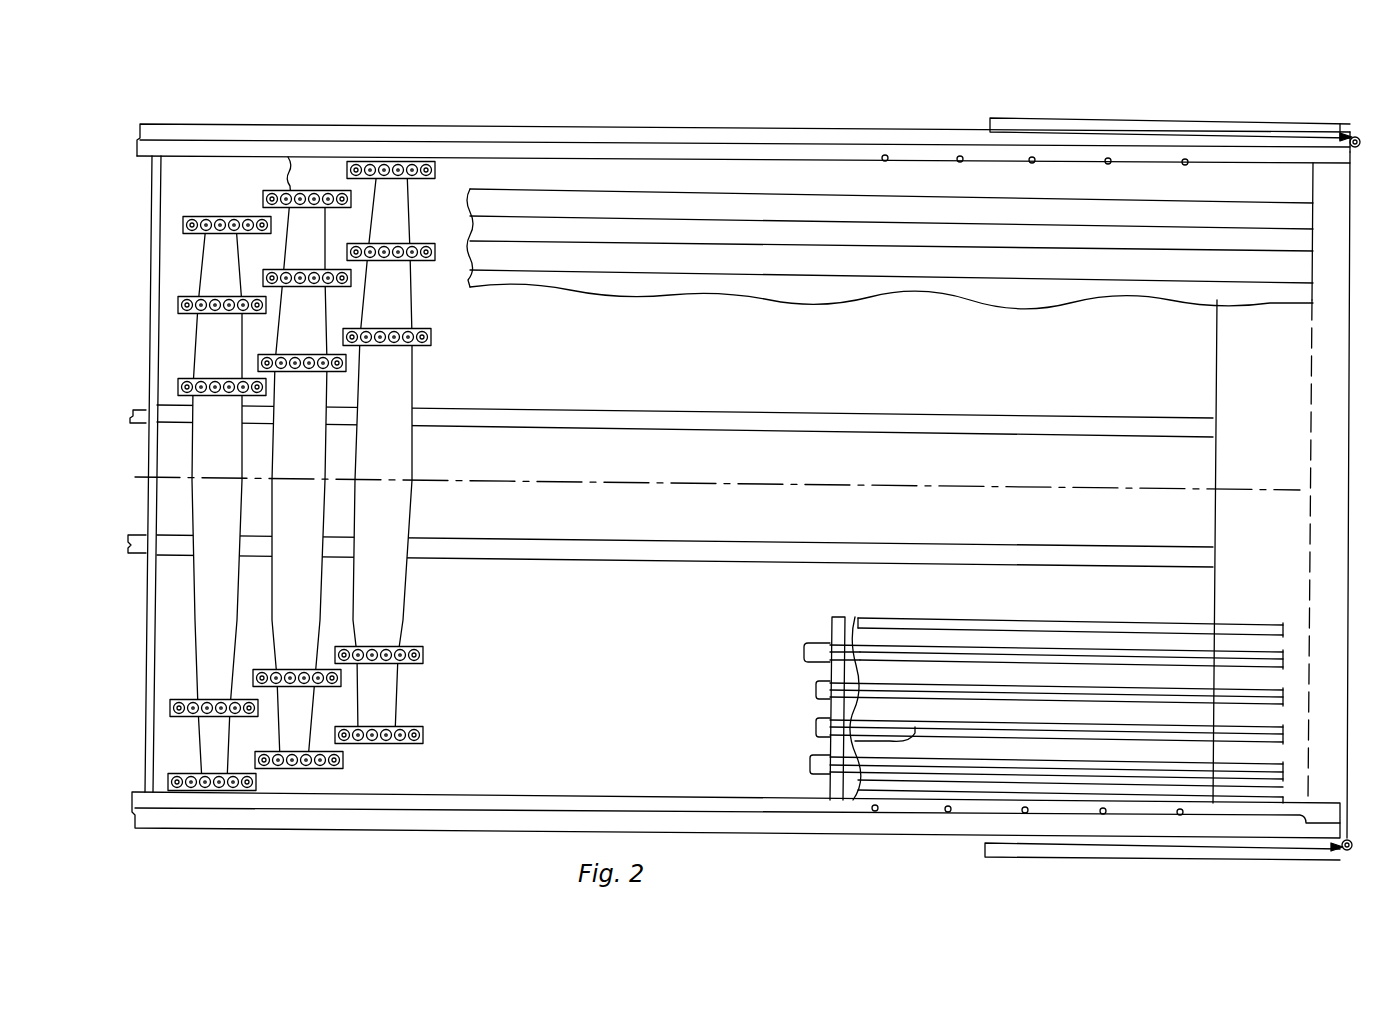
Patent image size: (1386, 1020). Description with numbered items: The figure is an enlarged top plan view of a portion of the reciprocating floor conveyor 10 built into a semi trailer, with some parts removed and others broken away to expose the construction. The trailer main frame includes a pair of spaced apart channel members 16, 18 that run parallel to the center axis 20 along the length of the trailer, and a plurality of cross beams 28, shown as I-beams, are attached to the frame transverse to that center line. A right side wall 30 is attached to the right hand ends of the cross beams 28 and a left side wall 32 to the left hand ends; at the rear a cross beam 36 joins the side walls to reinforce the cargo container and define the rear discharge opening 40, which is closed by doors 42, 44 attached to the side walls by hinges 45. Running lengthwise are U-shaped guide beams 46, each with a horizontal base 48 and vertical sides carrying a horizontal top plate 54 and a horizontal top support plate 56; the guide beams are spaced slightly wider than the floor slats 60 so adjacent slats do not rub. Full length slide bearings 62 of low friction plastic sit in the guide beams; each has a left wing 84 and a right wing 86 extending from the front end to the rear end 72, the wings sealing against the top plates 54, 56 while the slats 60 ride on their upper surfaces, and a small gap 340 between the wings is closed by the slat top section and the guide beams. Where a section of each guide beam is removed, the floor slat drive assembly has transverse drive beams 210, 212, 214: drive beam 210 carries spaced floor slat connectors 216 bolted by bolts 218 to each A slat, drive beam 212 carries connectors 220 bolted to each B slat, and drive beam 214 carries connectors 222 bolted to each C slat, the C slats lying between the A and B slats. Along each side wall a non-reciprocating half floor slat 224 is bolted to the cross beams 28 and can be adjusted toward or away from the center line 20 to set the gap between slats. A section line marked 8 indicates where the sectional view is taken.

The reciprocating floor conveyor 10 is at (1359, 172).
The channel member 16 is at (697, 405).
The channel member 18 is at (580, 563).
The center axis 20 is at (870, 477).
The cross beam 28 is at (160, 785).
The right side wall 30 is at (715, 138).
The left side wall 32 is at (888, 823).
The cross beam 36 is at (1325, 463).
The rear discharge opening 40 is at (1376, 378).
The door 42 is at (1035, 127).
The door 44 is at (1000, 850).
The hinge 45 is at (1357, 140).
The guide beam 46 is at (827, 720).
The horizontal base 48 is at (828, 772).
The horizontal top plate 54 is at (813, 660).
The horizontal top support plate 56 is at (818, 647).
The floor slat 60 is at (785, 178).
The slide bearing 62 is at (918, 635).
The rear end 72 is at (1285, 753).
The left wing 84 is at (950, 648).
The right wing 86 is at (1085, 625).
The transverse drive beam 210 is at (414, 385).
The transverse drive beam 212 is at (312, 738).
The transverse drive beam 214 is at (205, 262).
The floor slat connector 216 is at (430, 747).
The bolt 218 is at (422, 167).
The floor slat connector 220 is at (288, 157).
The floor slat connector 222 is at (265, 783).
The half floor slat 224 is at (638, 153).
The gap 340 is at (830, 747).
The section line 8 is at (945, 120).